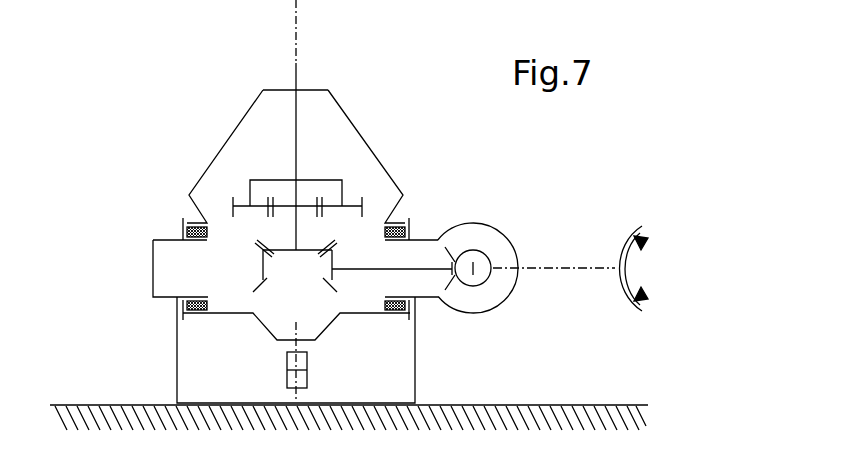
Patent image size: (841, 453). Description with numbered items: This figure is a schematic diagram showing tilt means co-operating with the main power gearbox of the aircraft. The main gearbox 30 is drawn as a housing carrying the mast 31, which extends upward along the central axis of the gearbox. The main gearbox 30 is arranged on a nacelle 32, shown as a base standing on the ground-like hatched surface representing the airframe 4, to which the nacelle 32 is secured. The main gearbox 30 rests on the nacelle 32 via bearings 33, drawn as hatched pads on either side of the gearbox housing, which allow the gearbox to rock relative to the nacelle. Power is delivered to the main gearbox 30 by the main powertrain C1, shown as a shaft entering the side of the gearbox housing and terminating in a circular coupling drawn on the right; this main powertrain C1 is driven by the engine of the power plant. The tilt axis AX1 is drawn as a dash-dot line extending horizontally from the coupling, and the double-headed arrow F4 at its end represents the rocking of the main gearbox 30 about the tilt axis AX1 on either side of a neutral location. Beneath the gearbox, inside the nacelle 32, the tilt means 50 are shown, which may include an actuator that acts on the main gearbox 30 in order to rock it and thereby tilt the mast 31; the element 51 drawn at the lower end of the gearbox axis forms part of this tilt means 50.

The airframe 4 is at (586, 403).
The main gearbox 30 is at (393, 120).
The mast 31 is at (296, 79).
The nacelle 32 is at (420, 368).
The bearings 33 is at (168, 208).
The tilt means 50 is at (306, 361).
The damping element 51 is at (286, 380).
The main powertrain C1 is at (489, 260).
The tilt axis AX1 is at (563, 272).
The double-headed arrow F4 is at (644, 268).